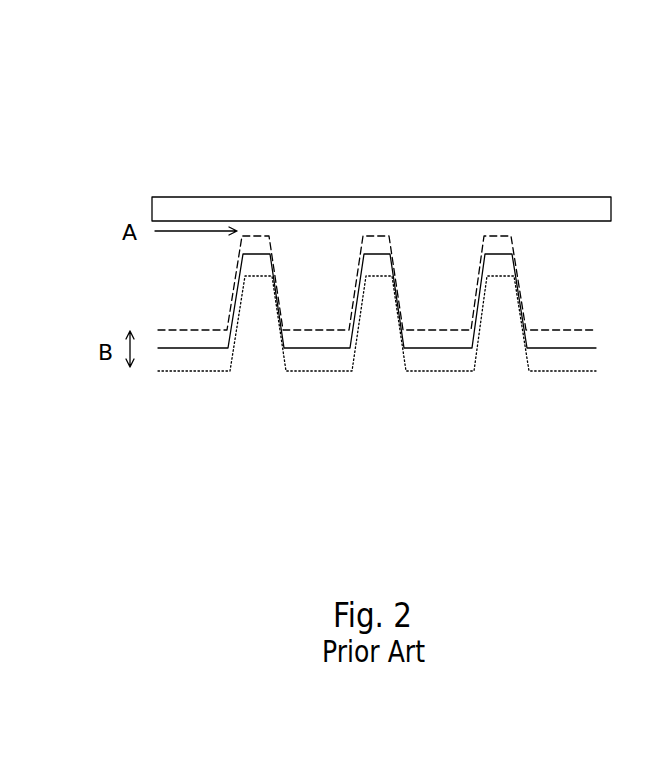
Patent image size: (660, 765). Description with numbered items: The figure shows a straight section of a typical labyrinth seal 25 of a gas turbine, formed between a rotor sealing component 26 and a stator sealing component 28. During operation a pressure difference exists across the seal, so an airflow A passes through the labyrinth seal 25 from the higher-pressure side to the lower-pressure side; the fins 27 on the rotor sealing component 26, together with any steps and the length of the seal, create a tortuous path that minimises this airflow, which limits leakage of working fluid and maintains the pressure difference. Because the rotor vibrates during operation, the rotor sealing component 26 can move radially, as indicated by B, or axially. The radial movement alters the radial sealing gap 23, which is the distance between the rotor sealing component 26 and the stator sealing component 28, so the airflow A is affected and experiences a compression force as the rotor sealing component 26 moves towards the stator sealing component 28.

The radial sealing gap 23 is at (392, 222).
The labyrinth seal 25 is at (189, 297).
The rotor sealing component 26 is at (293, 439).
The fins 27 is at (380, 347).
The stator sealing component 28 is at (363, 200).